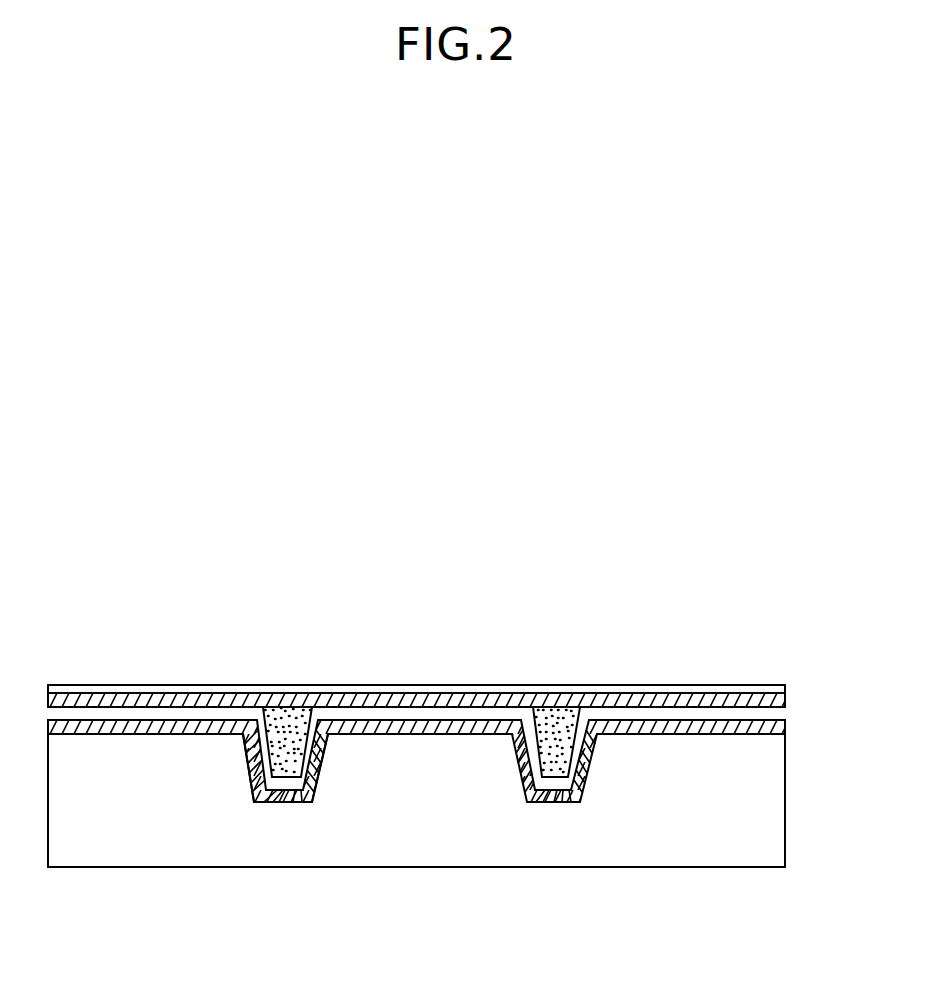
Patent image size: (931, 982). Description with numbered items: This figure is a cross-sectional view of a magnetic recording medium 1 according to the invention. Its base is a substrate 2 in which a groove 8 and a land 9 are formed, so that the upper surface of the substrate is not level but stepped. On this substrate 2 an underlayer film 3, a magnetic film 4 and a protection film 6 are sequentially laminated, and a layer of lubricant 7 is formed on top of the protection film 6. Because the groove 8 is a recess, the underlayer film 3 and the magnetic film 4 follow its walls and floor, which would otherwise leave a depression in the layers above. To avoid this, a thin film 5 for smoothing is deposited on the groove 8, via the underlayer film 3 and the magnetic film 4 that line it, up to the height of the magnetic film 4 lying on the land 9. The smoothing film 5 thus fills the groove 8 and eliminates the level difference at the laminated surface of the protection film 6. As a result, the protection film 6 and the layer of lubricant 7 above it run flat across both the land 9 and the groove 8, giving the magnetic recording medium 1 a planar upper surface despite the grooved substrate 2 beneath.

The magnetic recording medium 1 is at (454, 763).
The substrate 2 is at (787, 810).
The underlayer film 3 is at (787, 727).
The magnetic film 4 is at (787, 711).
The thin film for smoothing 5 is at (558, 728).
The protection film 6 is at (787, 698).
The lubricant 7 is at (783, 690).
The groove 8 is at (283, 802).
The land 9 is at (146, 734).